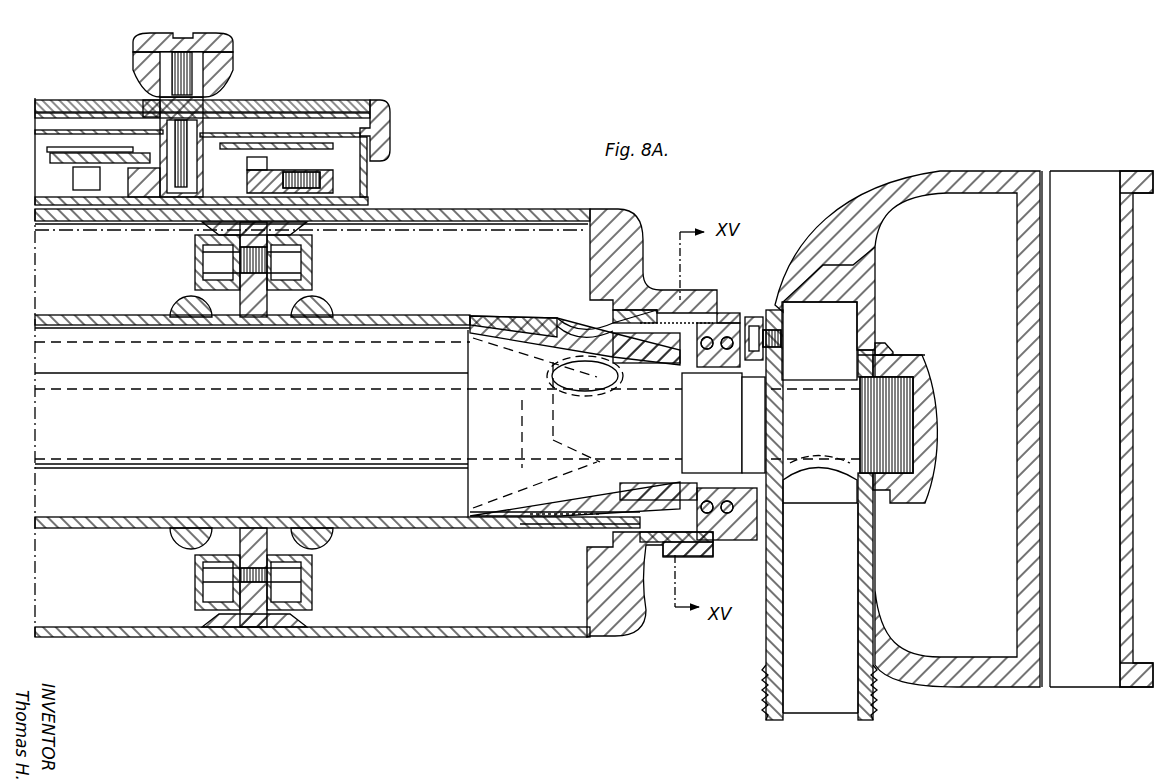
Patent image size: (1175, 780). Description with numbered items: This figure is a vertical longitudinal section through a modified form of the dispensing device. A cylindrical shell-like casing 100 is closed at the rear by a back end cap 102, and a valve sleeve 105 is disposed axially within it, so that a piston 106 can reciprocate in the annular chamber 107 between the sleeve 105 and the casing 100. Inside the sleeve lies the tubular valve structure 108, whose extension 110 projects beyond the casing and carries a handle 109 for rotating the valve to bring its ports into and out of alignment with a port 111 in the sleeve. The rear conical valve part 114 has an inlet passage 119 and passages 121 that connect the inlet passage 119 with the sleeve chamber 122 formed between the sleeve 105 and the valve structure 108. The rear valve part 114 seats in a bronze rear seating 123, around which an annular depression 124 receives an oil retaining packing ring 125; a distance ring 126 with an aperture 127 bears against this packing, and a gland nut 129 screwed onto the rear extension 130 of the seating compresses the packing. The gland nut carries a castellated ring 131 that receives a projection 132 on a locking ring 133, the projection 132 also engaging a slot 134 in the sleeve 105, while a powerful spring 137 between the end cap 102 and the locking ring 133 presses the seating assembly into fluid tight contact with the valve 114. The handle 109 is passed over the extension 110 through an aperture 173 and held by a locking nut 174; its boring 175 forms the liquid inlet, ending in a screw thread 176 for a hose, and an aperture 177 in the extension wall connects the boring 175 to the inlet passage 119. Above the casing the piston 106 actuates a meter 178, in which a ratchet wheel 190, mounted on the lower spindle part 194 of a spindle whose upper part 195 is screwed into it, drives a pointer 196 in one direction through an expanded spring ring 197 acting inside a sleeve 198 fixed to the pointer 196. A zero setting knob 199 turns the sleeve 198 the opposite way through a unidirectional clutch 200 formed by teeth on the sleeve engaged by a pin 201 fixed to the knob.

The casing 100 is at (518, 214).
The back end cap 102 is at (633, 262).
The valve sleeve 105 is at (412, 529).
The piston 106 is at (255, 297).
The annular chamber 107 is at (312, 423).
The tubular valve structure 108 is at (452, 420).
The handle 109 is at (866, 265).
The extension 110 is at (900, 420).
The port 111 is at (574, 328).
The rear valve part 114 is at (465, 424).
The inlet passage 119 is at (738, 387).
The passages 121 is at (523, 432).
The sleeve chamber 122 is at (252, 409).
The rear seating 123 is at (532, 326).
The annular depression 124 is at (527, 533).
The oil retaining packing ring 125 is at (550, 533).
The distance ring 126 is at (566, 533).
The aperture 127 is at (585, 376).
The gland nut 129 is at (652, 306).
The rear extension 130 is at (648, 361).
The castellated ring 131 is at (665, 557).
The projection 132 is at (748, 318).
The locking ring 133 is at (717, 541).
The slot 134 is at (692, 314).
The spring 137 is at (722, 348).
The aperture 173 is at (890, 347).
The locking nut 174 is at (922, 357).
The boring 175 is at (819, 515).
The screw thread 176 is at (765, 693).
The aperture 177 is at (817, 464).
The meter 178 is at (334, 123).
The ratchet wheel 190 is at (128, 203).
The lower spindle part 194 is at (204, 135).
The upper spindle part 195 is at (216, 91).
The pointer 196 is at (80, 135).
The expanded spring ring 197 is at (333, 180).
The sleeve 198 is at (333, 160).
The zero setting knob 199 is at (195, 36).
The unidirectional clutch 200 is at (222, 106).
The pin 201 is at (150, 100).